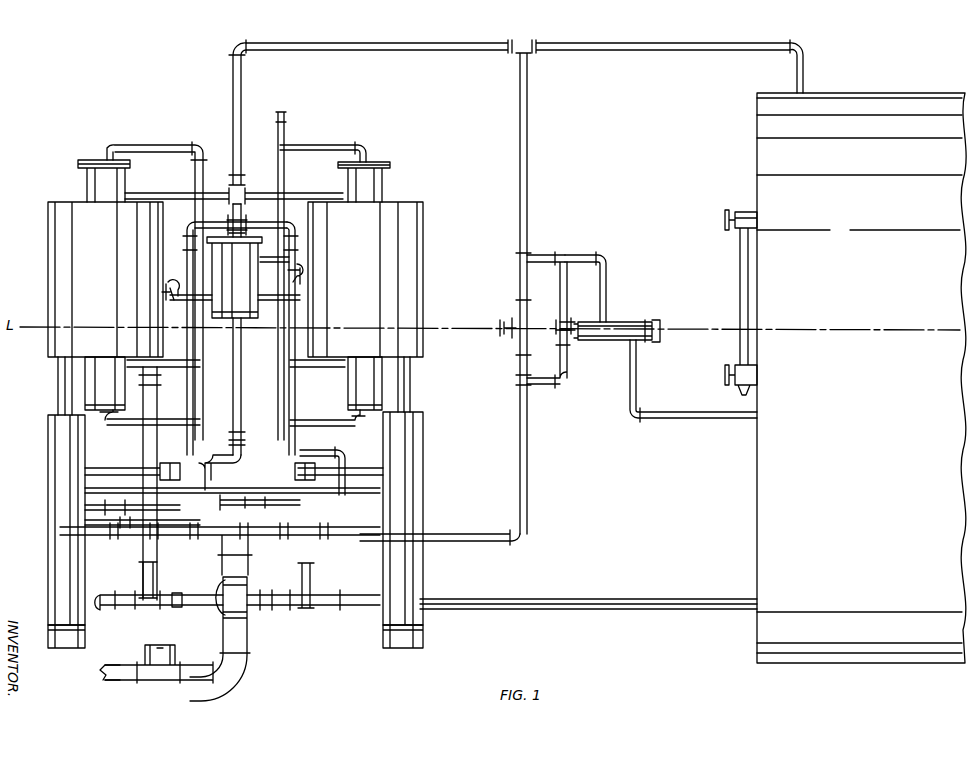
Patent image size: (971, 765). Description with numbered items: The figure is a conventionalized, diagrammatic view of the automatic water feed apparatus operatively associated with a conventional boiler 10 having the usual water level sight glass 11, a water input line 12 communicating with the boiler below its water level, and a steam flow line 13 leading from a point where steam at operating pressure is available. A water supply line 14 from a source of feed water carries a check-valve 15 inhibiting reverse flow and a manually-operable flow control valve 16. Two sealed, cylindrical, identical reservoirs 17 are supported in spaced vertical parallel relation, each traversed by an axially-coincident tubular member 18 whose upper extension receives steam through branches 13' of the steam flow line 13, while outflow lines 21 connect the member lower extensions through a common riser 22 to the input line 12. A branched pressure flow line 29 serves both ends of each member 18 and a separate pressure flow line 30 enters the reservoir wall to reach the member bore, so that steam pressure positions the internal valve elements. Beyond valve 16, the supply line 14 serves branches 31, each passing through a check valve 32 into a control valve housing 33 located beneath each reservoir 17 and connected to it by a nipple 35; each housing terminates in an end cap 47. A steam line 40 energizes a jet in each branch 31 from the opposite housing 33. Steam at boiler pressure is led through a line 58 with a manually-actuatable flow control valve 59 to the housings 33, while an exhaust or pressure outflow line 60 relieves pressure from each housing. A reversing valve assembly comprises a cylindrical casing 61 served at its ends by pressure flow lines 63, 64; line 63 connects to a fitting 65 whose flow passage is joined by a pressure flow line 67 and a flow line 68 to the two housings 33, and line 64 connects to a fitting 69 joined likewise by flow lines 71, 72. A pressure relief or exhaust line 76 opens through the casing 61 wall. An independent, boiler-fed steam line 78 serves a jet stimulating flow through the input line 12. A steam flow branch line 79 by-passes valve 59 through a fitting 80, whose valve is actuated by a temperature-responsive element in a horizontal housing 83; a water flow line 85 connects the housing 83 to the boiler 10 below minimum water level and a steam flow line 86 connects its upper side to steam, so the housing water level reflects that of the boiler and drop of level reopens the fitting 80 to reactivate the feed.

The boiler 10 is at (861, 378).
The water level sight glass 11 is at (740, 268).
The water input line 12 is at (590, 598).
The steam flow line 13 is at (502, 92).
The branches of the steam flow line 13' is at (234, 186).
The water supply line 14 is at (125, 690).
The check-valve 15 is at (158, 685).
The flow control valve 16 is at (223, 612).
The reservoirs 17 is at (235, 279).
The tubular member 18 is at (88, 180).
The outflow lines 21 is at (143, 378).
The common riser 22 is at (158, 404).
The branched pressure flow line 29 is at (155, 146).
The pressure flow line 30 is at (170, 276).
The branches 31 is at (115, 467).
The check valve 32 is at (186, 540).
The control valve housing 33 is at (50, 462).
The nipple 35 is at (58, 377).
The steam line 40 is at (260, 500).
The end cap 47 is at (72, 640).
The line 58 is at (530, 144).
The flow control valve 59 is at (512, 337).
The exhaust or pressure outflow line 60 is at (128, 560).
The casing 61 is at (235, 277).
The pressure flow line 63 is at (241, 410).
The pressure flow line 64 is at (229, 230).
The fitting 65 is at (241, 440).
The pressure flow line 67 is at (220, 460).
The flow line 68 is at (327, 448).
The fitting 69 is at (237, 218).
The flow line 71 is at (297, 226).
The flow line 72 is at (183, 230).
The pressure relief or exhaust line 76 is at (285, 118).
The boiler-fed steam line 78 is at (192, 586).
The steam flow branch line 79 is at (565, 283).
The fitting 80 is at (560, 325).
The housing 83 is at (620, 340).
The water flow line 85 is at (678, 415).
The steam flow line 86 is at (607, 286).